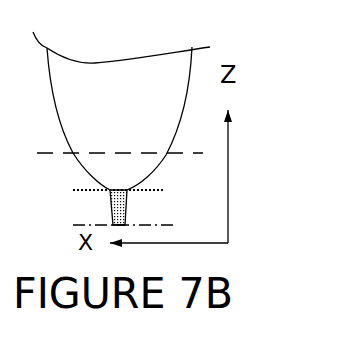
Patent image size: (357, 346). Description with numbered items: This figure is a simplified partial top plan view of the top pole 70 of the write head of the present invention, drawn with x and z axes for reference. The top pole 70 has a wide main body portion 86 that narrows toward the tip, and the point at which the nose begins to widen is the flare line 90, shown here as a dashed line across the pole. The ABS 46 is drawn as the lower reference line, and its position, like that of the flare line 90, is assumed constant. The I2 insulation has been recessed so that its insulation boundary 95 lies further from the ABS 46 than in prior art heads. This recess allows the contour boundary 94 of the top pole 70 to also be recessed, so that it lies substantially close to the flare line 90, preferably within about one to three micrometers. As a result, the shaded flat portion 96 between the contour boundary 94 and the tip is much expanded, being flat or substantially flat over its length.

The top pole 70 is at (124, 48).
The main body portion 86 is at (156, 98).
The I2 insulation boundary 95 is at (110, 151).
The flare line 90 is at (71, 188).
The contour boundary 94 is at (98, 190).
The flat portion 96 is at (127, 224).
The ABS 46 is at (161, 224).